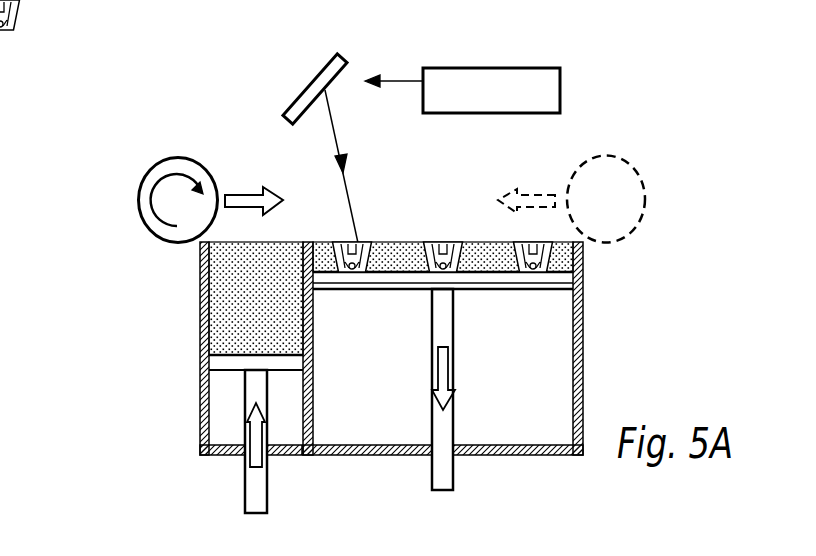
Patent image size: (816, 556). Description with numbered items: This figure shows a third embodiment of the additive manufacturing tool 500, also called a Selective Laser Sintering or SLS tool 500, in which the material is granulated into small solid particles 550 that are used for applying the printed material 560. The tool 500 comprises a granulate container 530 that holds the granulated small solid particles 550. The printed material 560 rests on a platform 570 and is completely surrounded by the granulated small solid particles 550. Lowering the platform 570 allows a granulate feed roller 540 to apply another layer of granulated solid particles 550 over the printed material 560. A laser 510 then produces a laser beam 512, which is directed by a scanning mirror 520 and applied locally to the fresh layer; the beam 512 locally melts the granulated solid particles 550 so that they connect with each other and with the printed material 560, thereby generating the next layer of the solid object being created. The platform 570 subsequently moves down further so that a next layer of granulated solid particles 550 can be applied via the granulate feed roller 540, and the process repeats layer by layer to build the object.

The additive manufacturing tool 500 is at (128, 83).
The laser 510 is at (493, 85).
The laser beam 512 is at (345, 182).
The scanning mirror 520 is at (313, 88).
The granulate container 530 is at (200, 382).
The granulate feed roller 540 is at (140, 202).
The granulated small solid particles 550 is at (240, 312).
The printed material 560 is at (363, 272).
The platform 570 is at (565, 281).